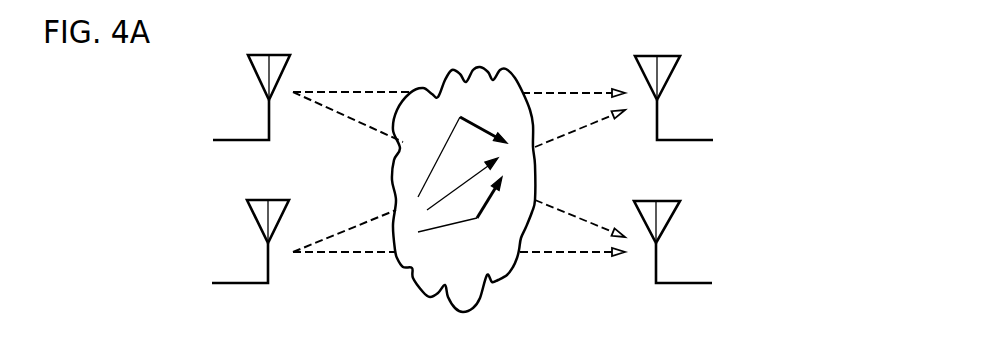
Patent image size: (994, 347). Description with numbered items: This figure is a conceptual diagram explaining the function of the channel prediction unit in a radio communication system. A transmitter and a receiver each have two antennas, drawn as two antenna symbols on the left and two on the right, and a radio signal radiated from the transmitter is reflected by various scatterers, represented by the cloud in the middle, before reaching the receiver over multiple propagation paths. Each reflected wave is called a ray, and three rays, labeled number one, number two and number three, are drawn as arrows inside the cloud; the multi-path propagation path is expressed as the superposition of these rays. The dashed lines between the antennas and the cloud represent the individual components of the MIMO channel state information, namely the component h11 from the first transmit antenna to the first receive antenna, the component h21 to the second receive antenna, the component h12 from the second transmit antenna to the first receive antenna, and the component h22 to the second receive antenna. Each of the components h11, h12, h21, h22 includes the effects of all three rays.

The MIMO CSI component h11 is at (364, 89).
The MIMO CSI component h21 is at (337, 112).
The MIMO CSI component h12 is at (350, 225).
The MIMO CSI component h22 is at (347, 253).